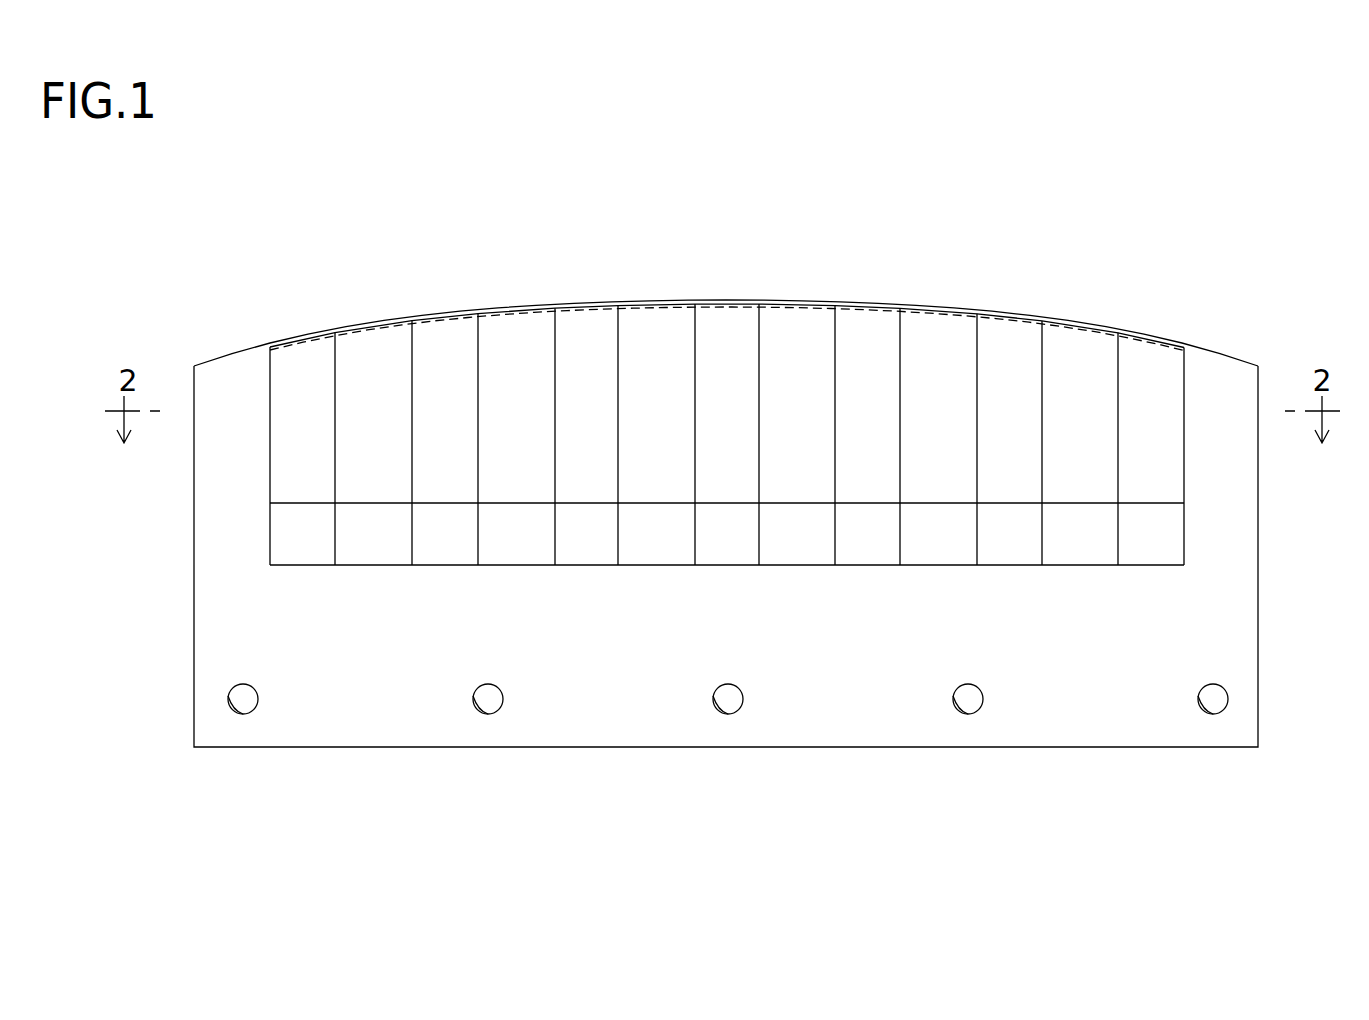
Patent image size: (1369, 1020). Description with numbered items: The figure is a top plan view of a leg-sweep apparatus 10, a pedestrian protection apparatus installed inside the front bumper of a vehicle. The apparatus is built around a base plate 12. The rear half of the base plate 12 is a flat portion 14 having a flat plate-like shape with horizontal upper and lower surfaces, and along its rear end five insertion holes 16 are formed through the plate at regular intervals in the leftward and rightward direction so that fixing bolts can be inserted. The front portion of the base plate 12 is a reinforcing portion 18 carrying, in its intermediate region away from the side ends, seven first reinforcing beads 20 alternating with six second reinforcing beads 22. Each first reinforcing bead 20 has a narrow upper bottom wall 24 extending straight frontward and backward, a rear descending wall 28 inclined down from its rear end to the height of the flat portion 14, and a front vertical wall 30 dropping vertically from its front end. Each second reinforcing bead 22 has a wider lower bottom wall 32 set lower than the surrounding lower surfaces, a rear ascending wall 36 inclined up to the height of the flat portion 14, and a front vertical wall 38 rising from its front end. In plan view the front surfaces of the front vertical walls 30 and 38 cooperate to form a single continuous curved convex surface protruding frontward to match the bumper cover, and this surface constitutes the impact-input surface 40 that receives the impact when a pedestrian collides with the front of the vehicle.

The leg-sweep apparatus 10 is at (699, 479).
The base plate 12 is at (116, 540).
The flat portion 14 is at (195, 650).
The insertion holes 16 is at (1208, 715).
The reinforcing portion 18 is at (195, 479).
The first reinforcing beads 20 is at (764, 382).
The second reinforcing beads 22 is at (839, 385).
The upper bottom wall 24 is at (796, 437).
The rear descending wall 28 is at (796, 593).
The front vertical wall 30 is at (751, 279).
The lower bottom wall 32 is at (657, 446).
The rear ascending wall 36 is at (636, 569).
The front vertical wall 38 is at (727, 272).
The impact-input surface 40 is at (748, 300).